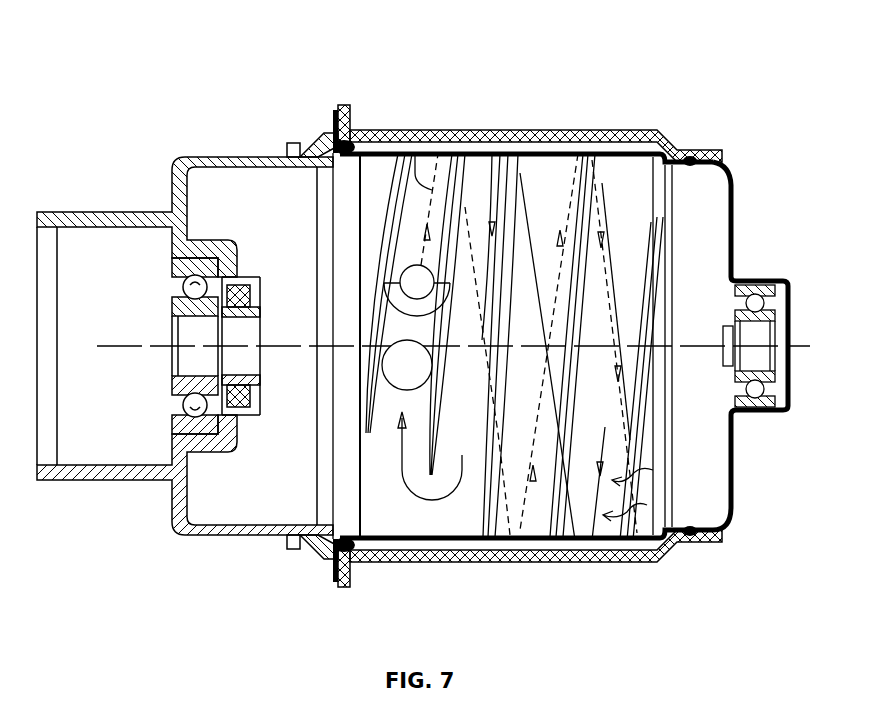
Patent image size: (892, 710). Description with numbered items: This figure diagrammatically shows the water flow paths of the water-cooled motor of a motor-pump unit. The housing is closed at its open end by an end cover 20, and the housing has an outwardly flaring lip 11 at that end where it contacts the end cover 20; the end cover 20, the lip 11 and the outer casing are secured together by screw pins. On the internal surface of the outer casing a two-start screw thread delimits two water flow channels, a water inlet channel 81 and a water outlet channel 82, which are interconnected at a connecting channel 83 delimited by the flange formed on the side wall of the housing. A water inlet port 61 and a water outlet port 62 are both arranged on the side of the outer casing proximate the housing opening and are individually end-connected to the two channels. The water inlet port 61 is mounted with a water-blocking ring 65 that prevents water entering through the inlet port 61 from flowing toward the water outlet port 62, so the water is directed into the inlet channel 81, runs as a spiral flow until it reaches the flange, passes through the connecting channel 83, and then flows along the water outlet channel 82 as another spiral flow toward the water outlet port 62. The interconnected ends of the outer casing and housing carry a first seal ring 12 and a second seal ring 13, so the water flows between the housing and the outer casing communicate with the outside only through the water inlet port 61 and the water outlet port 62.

The end cover 20 is at (208, 233).
The first seal ring 12 is at (322, 140).
The lip 11 is at (353, 130).
The water inlet channel 81 is at (433, 130).
The water outlet channel 82 is at (566, 560).
The second seal ring 13 is at (690, 152).
The water inlet port 61 is at (411, 285).
The water-blocking ring 65 is at (397, 297).
The water outlet port 62 is at (407, 373).
The connecting channel 83 is at (632, 470).